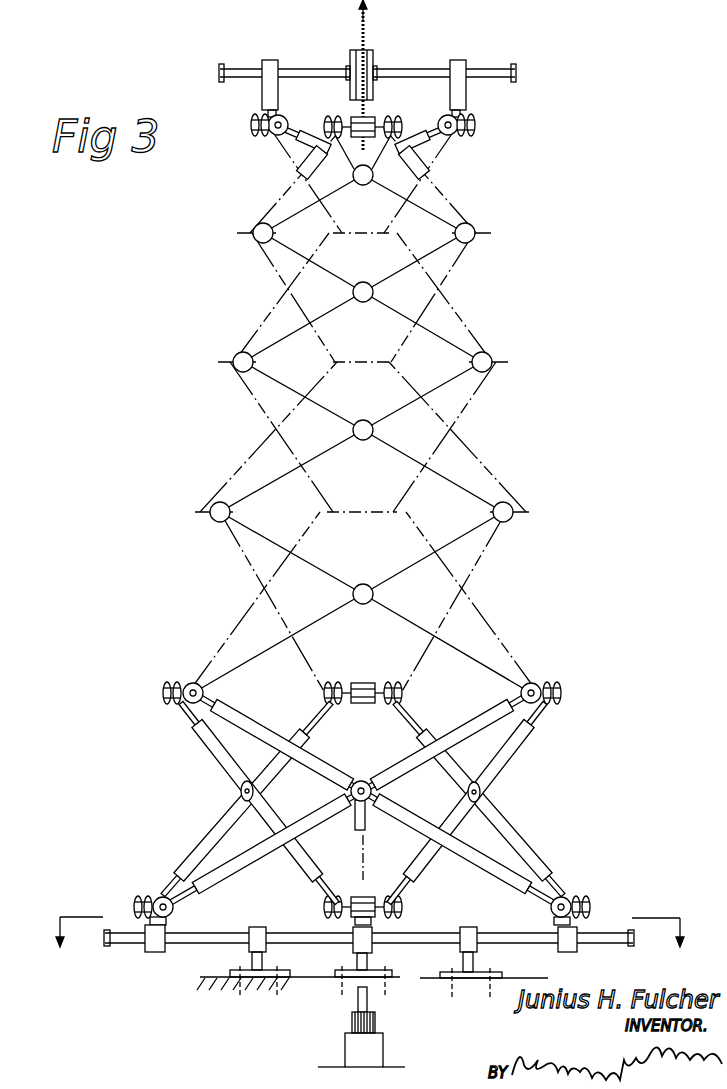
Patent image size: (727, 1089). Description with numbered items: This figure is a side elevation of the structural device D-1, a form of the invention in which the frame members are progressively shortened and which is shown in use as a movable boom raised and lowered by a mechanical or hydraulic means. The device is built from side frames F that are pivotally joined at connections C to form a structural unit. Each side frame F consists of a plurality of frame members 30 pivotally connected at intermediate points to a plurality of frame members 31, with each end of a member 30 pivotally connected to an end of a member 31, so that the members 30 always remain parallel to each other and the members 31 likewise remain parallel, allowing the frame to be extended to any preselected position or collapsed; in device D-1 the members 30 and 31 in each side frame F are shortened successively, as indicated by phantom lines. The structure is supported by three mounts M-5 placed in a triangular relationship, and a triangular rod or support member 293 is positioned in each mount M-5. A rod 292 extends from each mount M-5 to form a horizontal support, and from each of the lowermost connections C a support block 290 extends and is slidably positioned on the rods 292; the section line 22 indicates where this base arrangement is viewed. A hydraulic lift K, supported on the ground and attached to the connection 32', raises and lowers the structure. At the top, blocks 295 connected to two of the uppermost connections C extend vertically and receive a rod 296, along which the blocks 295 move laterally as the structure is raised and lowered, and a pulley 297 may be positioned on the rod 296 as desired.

The block 295 is at (270, 62).
The rod 296 is at (405, 73).
The pulley 297 is at (370, 48).
The connection C is at (266, 132).
The structural device D-1 is at (528, 506).
The connection 32' is at (368, 809).
The frame member 31 is at (308, 826).
The frame member 30 is at (468, 857).
The side frame F is at (228, 791).
The support block 290 is at (170, 932).
The rod 292 is at (112, 898).
The rod or support member 293 is at (440, 942).
The mount M-5 is at (262, 968).
The hydraulic lift K is at (378, 1020).
The section line 22 is at (370, 944).